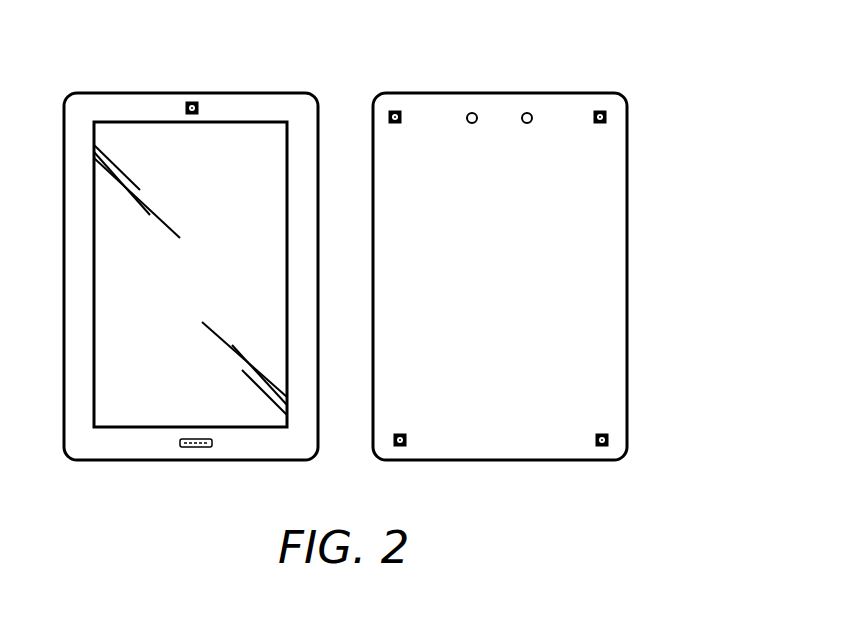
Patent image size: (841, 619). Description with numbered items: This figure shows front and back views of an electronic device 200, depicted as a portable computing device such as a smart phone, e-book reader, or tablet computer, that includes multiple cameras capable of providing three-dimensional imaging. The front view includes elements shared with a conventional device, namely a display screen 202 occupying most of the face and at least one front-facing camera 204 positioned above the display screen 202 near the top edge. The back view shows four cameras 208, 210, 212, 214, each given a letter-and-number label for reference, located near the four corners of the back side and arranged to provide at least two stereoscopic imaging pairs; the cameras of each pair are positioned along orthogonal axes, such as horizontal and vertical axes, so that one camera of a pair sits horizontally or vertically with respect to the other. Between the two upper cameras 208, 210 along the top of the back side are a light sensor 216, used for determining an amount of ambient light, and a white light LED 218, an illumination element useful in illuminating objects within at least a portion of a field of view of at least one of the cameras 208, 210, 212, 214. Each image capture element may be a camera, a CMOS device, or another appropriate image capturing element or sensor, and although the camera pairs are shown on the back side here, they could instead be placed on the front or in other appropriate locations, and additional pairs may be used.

The electronic device 200 is at (722, 103).
The display screen 202 is at (94, 130).
The front-facing camera 204 is at (191, 101).
The camera 208 is at (394, 110).
The camera 210 is at (605, 121).
The camera 212 is at (403, 446).
The camera 214 is at (608, 438).
The light sensor 216 is at (473, 112).
The white light LED 218 is at (528, 112).